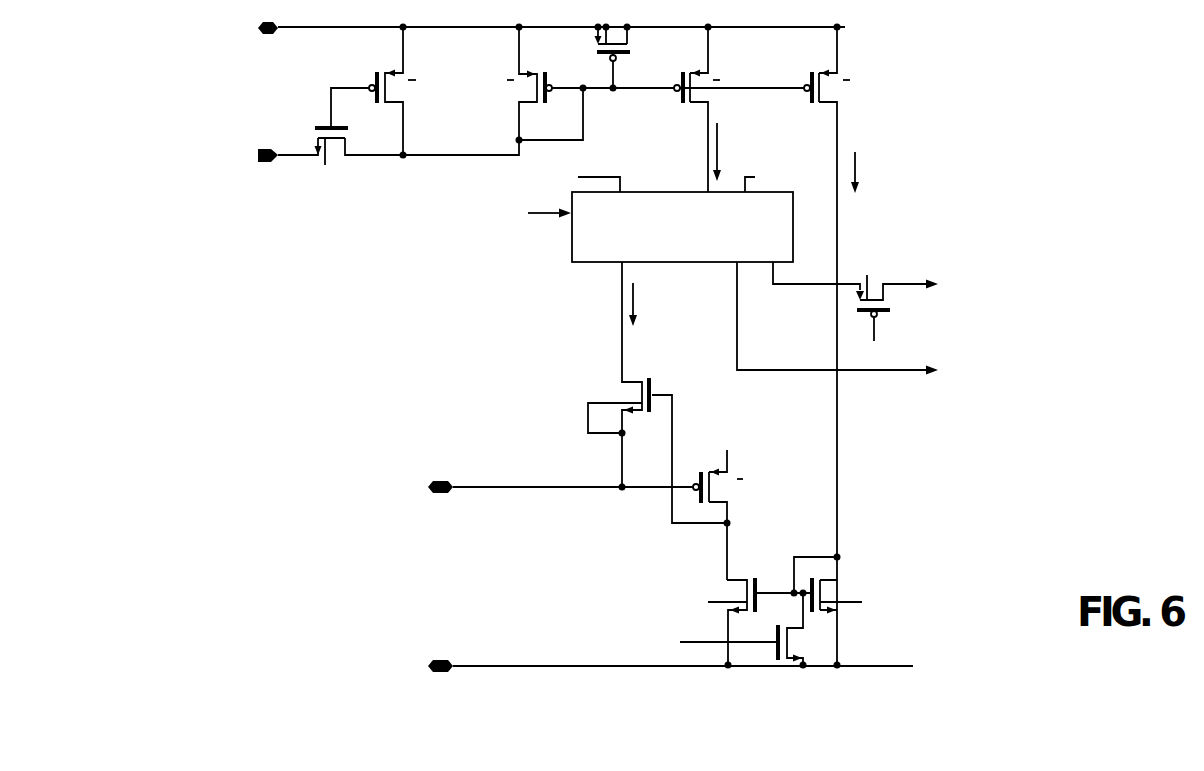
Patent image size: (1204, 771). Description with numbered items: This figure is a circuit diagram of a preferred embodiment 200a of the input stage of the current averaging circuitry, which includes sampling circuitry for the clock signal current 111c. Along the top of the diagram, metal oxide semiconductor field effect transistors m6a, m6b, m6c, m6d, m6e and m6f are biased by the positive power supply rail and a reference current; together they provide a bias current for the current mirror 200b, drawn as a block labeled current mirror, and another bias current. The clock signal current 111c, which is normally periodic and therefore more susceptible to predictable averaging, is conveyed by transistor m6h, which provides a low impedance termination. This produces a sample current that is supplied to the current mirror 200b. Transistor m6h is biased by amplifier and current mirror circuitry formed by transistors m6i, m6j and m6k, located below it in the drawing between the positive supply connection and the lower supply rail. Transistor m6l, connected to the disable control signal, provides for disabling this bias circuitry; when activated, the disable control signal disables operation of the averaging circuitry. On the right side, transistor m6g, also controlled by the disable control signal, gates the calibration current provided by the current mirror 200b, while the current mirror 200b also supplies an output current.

The input stage of the current averaging circuitry 200a is at (308, 601).
The current mirror 200b is at (582, 263).
The clock signal current 111c is at (481, 486).
The transistor M6a m6a is at (300, 145).
The transistor M6b m6b is at (394, 91).
The transistor M6c m6c is at (569, 83).
The transistor M6d m6d is at (639, 57).
The transistor M6e m6e is at (725, 109).
The transistor M6f m6f is at (847, 346).
The transistor M6g m6g is at (889, 298).
The transistor M6h m6h is at (646, 392).
The transistor M6i m6i is at (739, 502).
The transistor M6j m6j is at (737, 605).
The transistor M6k m6k is at (851, 579).
The transistor M6l m6l is at (698, 644).